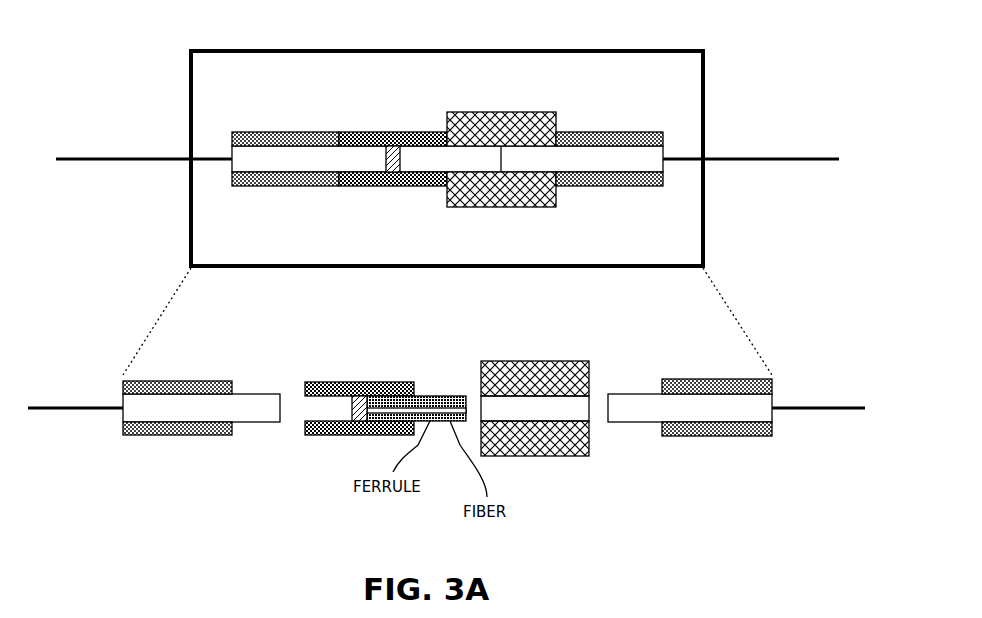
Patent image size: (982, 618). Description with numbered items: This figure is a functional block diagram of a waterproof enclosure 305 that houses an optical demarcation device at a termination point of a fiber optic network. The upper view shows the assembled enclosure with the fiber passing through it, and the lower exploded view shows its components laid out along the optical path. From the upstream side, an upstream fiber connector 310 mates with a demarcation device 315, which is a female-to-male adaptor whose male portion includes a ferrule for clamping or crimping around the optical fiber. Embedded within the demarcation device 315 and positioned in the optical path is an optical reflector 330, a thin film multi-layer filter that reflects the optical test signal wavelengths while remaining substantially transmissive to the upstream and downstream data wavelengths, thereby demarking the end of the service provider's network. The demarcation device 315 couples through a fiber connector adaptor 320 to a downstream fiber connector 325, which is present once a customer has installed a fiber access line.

The waterproof enclosure 305 is at (647, 51).
The upstream fiber connector 310 is at (205, 357).
The demarcation device 315 is at (366, 357).
The fiber connector adaptor 320 is at (538, 340).
The downstream fiber connector 325 is at (724, 357).
The optical reflector 330 is at (357, 410).